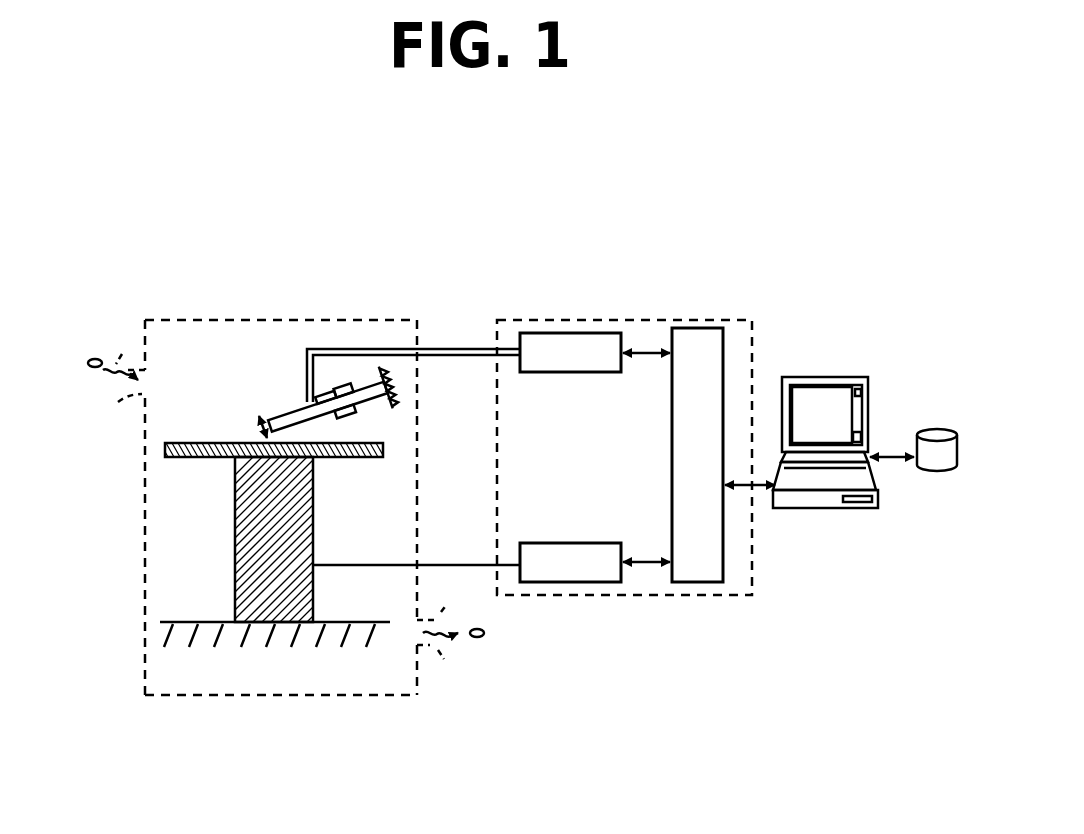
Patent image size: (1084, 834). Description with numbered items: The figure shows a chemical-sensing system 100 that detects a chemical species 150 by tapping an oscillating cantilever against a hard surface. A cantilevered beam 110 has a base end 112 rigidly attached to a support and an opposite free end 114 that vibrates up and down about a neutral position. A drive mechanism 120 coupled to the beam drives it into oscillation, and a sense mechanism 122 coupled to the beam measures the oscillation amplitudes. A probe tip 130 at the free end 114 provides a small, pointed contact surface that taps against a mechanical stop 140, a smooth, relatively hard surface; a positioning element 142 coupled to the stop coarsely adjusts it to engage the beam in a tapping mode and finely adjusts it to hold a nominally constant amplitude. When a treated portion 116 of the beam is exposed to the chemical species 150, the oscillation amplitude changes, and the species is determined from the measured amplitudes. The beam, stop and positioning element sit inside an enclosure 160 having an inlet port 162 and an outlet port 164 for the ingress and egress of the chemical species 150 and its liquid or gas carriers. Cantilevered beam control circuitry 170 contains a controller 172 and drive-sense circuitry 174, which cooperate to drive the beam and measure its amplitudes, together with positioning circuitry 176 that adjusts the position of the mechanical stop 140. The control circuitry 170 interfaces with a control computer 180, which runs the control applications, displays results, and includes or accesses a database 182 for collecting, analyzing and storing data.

The chemical-sensing system 100 is at (283, 147).
The cantilevered beam 110 is at (276, 372).
The base end 112 is at (376, 386).
The free end 114 is at (268, 410).
The treated portion 116 is at (352, 410).
The drive mechanism 120 is at (330, 386).
The sense mechanism 122 is at (350, 382).
The probe tip 130 is at (274, 426).
The mechanical stop 140 is at (166, 443).
The positioning element 142 is at (236, 543).
The chemical species 150 is at (90, 360).
The enclosure 160 is at (185, 695).
The inlet port 162 is at (132, 368).
The outlet port 164 is at (427, 645).
The cantilevered beam control circuitry 170 is at (597, 320).
The controller 172 is at (713, 328).
The drive-sense circuitry 174 is at (537, 333).
The positioning circuitry 176 is at (573, 582).
The control computer 180 is at (817, 377).
The database 182 is at (928, 431).